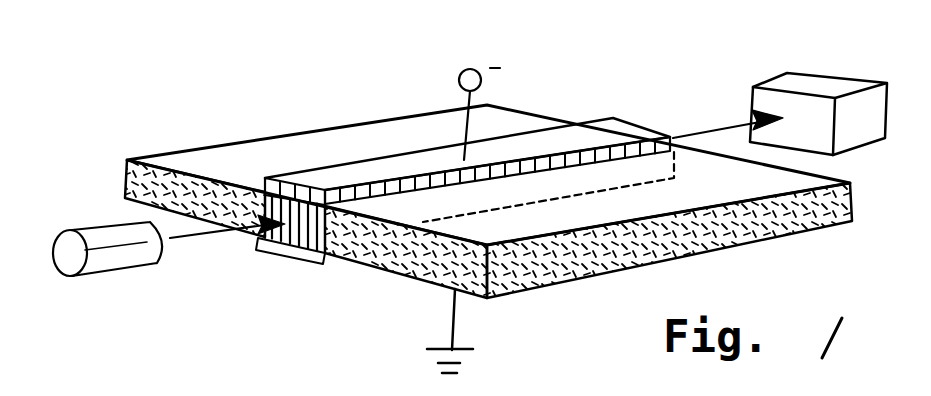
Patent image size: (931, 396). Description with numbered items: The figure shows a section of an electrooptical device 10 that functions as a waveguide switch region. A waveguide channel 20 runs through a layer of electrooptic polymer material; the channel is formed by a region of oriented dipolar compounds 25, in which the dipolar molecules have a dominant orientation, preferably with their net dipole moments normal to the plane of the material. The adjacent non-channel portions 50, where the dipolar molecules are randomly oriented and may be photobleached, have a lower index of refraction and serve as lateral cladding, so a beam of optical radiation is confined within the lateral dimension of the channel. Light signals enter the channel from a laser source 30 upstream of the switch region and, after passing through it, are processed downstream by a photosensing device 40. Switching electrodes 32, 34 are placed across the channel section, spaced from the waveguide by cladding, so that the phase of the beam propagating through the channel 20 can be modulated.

The electrooptical device 10 is at (355, 101).
The waveguide channel 20 is at (256, 177).
The region of oriented dipolar compounds 25 is at (306, 247).
The laser source 30 is at (117, 242).
The switching electrode 32 is at (258, 248).
The switching electrode 34 is at (600, 138).
The photosensing device 40 is at (778, 79).
The non-channel portions 50 is at (377, 265).